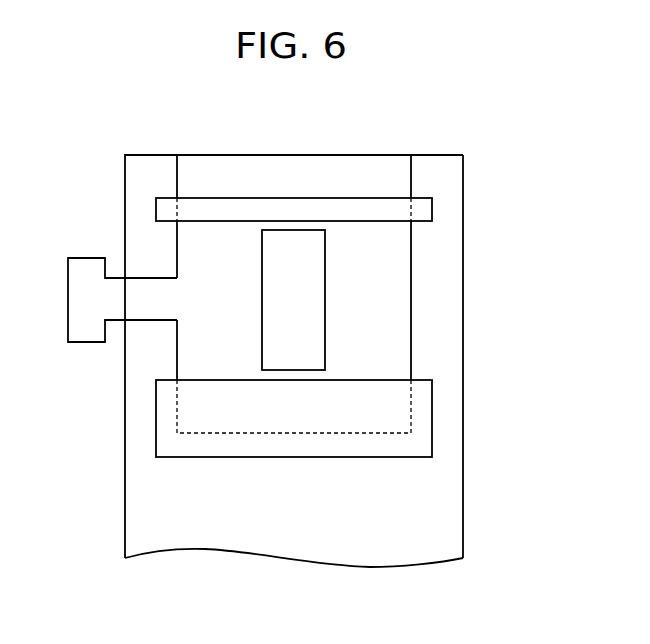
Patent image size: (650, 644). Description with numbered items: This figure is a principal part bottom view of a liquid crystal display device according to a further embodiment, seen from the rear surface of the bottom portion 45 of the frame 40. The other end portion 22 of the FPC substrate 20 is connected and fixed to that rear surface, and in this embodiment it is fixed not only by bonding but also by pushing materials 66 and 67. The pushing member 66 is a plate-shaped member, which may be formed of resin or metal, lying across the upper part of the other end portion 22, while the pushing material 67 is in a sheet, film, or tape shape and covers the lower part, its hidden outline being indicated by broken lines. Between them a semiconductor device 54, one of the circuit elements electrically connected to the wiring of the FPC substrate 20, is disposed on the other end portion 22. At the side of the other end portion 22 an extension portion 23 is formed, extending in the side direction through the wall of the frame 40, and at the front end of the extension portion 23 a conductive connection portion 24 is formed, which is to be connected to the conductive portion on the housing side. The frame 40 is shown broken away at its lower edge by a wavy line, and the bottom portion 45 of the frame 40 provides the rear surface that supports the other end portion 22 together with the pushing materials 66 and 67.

The FPC substrate 20 is at (400, 346).
The other end portion 22 is at (371, 267).
The extension portion 23 is at (148, 308).
The conductive connection portion 24 is at (78, 300).
The frame 40 is at (463, 470).
The bottom portion 45 is at (450, 272).
The semiconductor device 54 is at (273, 254).
The pushing member 66 is at (423, 210).
The pushing material 67 is at (427, 410).